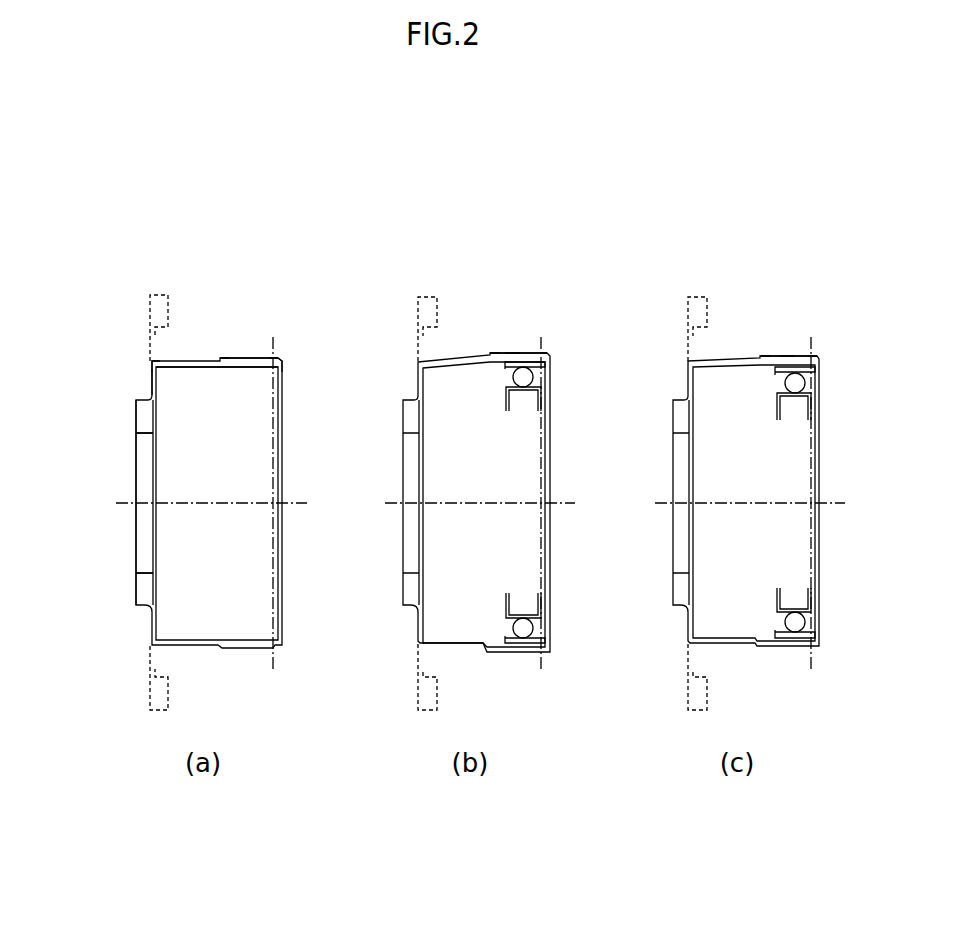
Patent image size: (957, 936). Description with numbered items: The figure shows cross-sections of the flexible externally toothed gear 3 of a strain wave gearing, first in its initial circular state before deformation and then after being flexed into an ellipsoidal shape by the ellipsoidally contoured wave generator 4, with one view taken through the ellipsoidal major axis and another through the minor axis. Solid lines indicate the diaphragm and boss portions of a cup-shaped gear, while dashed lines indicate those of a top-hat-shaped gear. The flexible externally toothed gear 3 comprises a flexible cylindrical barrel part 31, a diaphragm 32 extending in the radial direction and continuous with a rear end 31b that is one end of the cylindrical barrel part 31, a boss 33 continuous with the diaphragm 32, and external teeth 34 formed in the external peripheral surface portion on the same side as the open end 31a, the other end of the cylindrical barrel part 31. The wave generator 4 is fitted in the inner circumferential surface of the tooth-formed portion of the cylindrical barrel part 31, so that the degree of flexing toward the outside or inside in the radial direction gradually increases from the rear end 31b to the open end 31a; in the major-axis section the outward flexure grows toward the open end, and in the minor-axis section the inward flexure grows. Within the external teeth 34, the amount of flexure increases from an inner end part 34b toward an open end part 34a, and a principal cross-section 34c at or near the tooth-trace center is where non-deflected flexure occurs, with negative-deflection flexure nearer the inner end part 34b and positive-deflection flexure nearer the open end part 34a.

The flexible externally toothed gear 3 is at (180, 284).
The wave generator 4 is at (550, 401).
The cylindrical barrel part 31 is at (194, 368).
The open end 31a is at (279, 365).
The rear end 31b is at (150, 362).
The diaphragm 32 is at (150, 386).
The boss 33 is at (143, 418).
The external teeth 34 is at (257, 348).
The open end part 34a is at (276, 359).
The inner end part 34b is at (222, 357).
The principal cross-section 34c is at (513, 354).